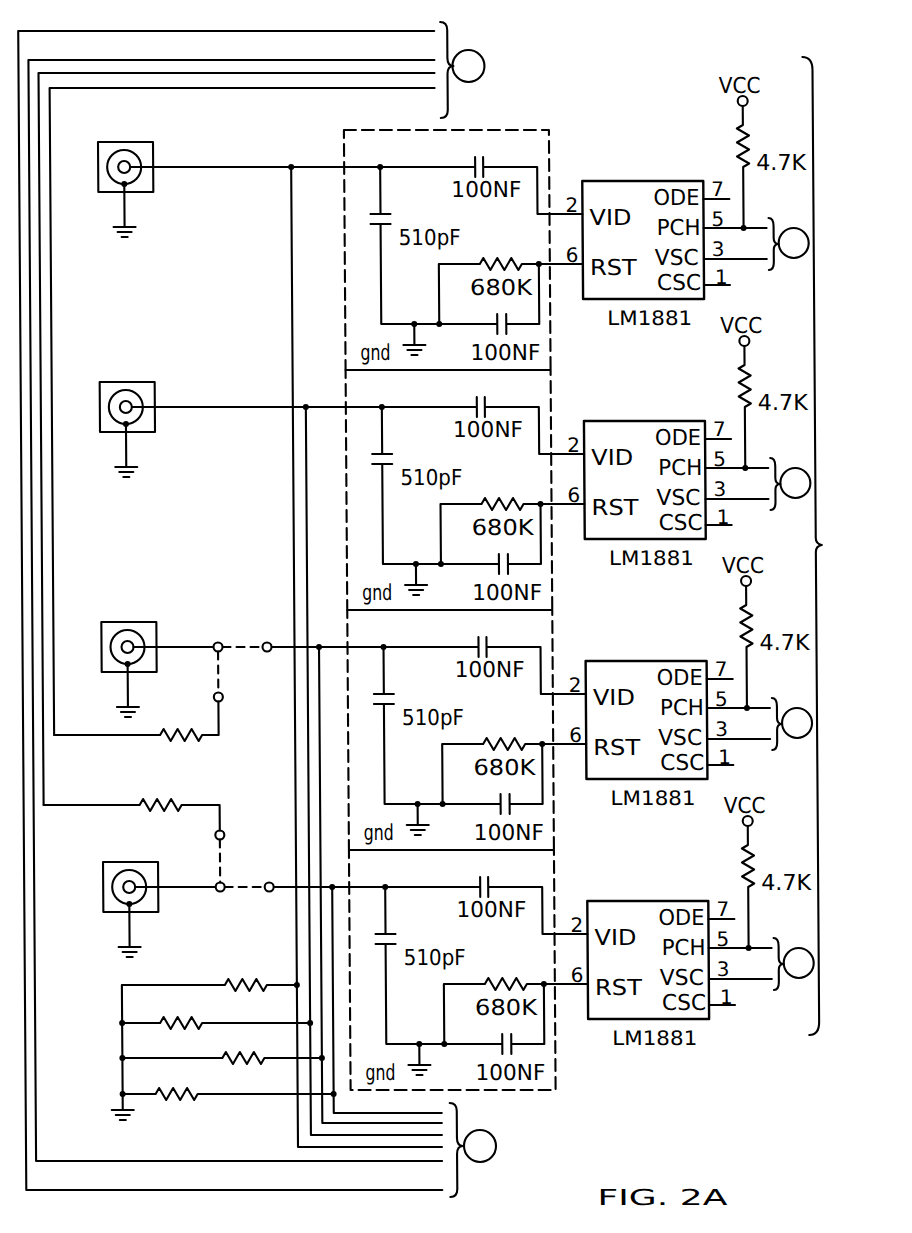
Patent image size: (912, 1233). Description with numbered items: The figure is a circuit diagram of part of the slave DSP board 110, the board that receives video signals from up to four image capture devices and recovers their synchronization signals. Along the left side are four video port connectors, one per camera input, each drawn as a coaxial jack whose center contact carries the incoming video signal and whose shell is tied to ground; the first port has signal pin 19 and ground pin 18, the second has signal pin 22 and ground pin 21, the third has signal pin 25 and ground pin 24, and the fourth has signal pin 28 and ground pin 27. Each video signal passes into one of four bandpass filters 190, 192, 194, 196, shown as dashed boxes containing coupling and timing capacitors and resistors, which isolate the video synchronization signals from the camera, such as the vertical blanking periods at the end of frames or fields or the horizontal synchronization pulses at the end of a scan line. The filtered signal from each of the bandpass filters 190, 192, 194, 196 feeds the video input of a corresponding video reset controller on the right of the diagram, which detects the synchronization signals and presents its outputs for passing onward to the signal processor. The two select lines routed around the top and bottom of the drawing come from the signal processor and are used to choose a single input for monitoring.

The slave DSP board 110 is at (422, 601).
The bandpass filter 190 is at (549, 346).
The bandpass filter 192 is at (483, 490).
The bandpass filter 194 is at (484, 730).
The bandpass filter 196 is at (486, 970).
The connector J3 signal pin (A1) 19 is at (222, 153).
The connector J3 ground pin (A1) 18 is at (110, 213).
The connector J3 signal pin (A2) 22 is at (223, 393).
The connector J3 ground pin (A2) 21 is at (112, 453).
The connector J3 signal pin (A3) 25 is at (218, 682).
The connector J3 ground pin (A3) 24 is at (117, 693).
The connector J3 signal pin (A4) 28 is at (214, 848).
The connector J3 ground pin (A4) 27 is at (118, 933).